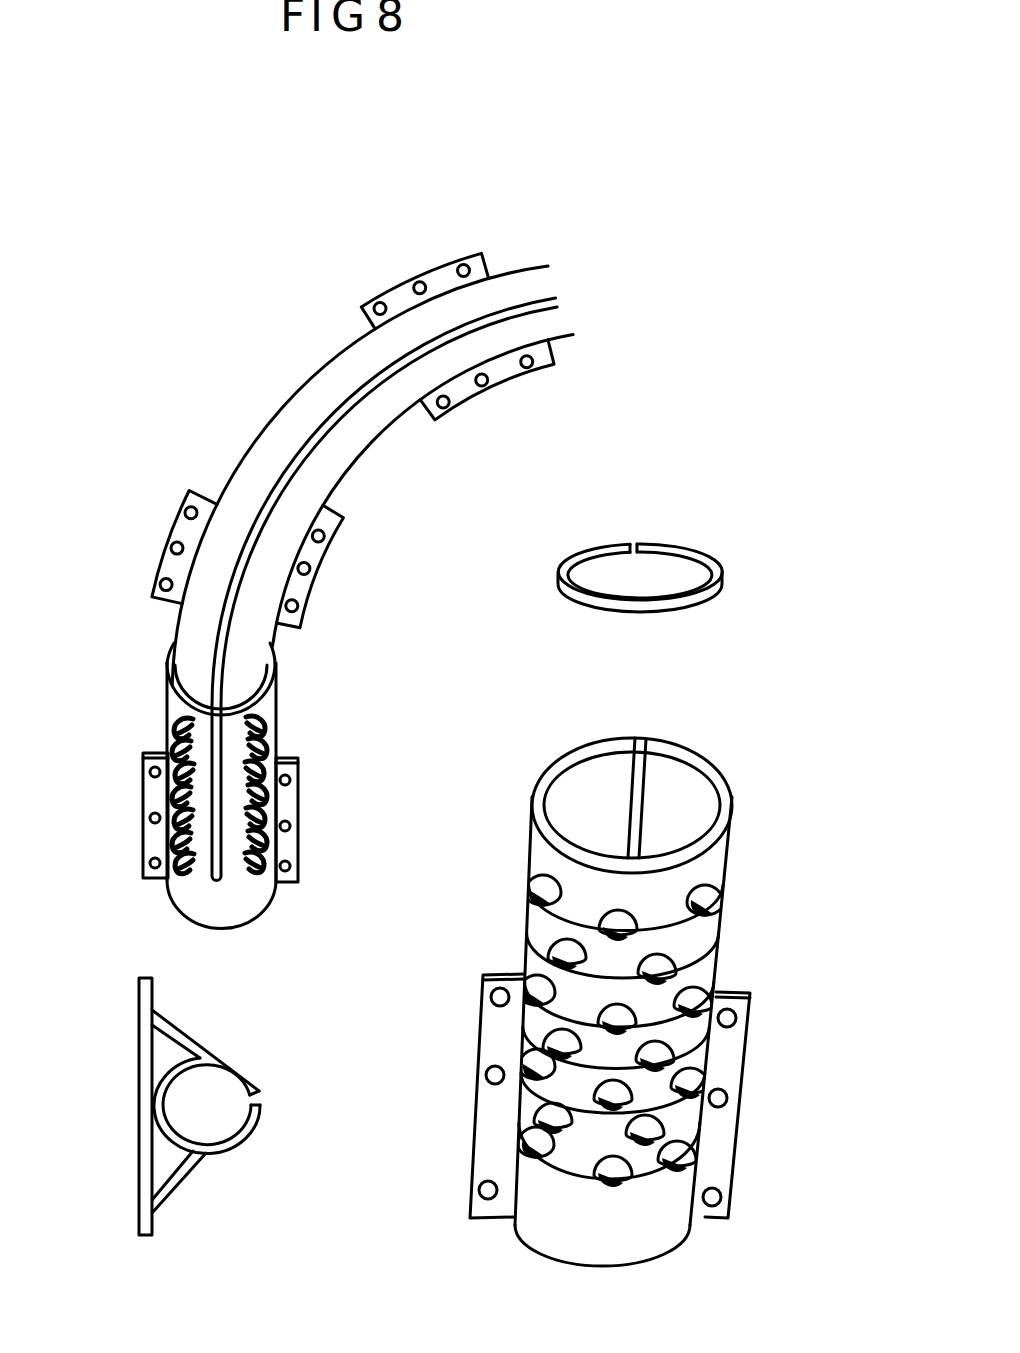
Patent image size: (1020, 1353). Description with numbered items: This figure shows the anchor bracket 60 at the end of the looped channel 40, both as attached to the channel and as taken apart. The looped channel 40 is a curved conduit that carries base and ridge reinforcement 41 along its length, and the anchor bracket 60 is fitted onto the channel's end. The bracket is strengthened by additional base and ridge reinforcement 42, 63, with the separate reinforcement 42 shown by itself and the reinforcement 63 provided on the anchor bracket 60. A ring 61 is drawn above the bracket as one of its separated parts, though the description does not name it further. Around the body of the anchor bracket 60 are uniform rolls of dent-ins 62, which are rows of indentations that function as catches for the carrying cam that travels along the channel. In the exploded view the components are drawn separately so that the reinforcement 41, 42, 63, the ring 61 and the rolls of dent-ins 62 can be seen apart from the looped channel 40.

The looped channel 40 is at (228, 445).
The base and ridge reinforcement 41 is at (389, 281).
The base and ridge reinforcement 42 is at (193, 1183).
The anchor bracket 60 is at (158, 893).
The retaining ring 61 is at (568, 553).
The uniform rolls of dent-ins 62 is at (533, 898).
The base and ridge reinforcement 63 is at (468, 1213).